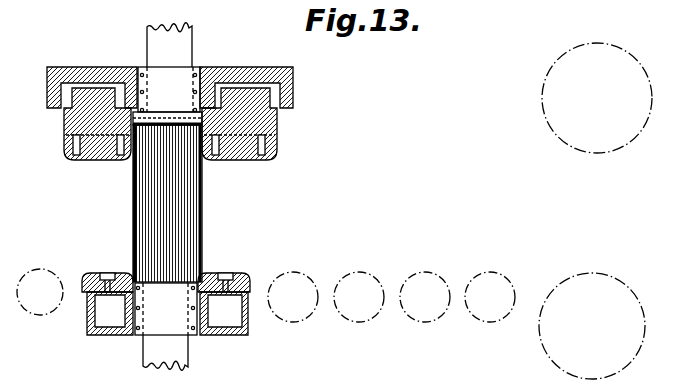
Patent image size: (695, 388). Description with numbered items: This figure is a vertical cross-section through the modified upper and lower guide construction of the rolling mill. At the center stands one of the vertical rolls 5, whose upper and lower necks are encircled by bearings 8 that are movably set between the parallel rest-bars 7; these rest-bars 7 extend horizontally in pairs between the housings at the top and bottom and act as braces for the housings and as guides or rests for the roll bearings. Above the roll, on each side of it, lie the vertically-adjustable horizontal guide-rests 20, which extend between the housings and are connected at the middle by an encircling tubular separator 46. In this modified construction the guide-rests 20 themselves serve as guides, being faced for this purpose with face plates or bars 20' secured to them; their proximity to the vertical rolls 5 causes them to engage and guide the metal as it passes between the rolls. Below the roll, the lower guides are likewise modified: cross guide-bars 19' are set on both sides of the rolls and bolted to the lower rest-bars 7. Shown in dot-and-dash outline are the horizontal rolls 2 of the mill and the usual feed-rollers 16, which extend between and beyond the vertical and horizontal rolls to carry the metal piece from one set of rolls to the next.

The horizontal rolls 2 is at (595, 211).
The vertical rolls 5 is at (167, 203).
The rest-bars 7 is at (91, 68).
The bearings 8 is at (177, 82).
The feed-rollers 16 is at (266, 295).
The cross guide-bars 19' is at (176, 269).
The guide-rests 20 is at (169, 124).
The face plates 20' is at (162, 172).
The tubular separator 46 is at (152, 118).